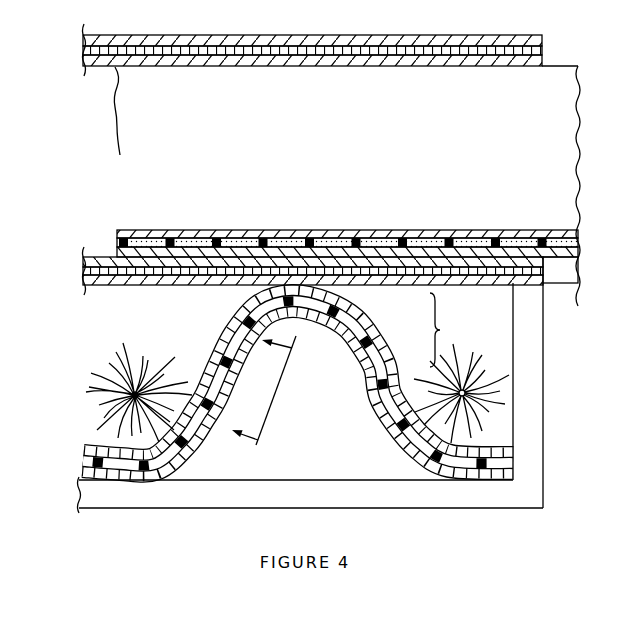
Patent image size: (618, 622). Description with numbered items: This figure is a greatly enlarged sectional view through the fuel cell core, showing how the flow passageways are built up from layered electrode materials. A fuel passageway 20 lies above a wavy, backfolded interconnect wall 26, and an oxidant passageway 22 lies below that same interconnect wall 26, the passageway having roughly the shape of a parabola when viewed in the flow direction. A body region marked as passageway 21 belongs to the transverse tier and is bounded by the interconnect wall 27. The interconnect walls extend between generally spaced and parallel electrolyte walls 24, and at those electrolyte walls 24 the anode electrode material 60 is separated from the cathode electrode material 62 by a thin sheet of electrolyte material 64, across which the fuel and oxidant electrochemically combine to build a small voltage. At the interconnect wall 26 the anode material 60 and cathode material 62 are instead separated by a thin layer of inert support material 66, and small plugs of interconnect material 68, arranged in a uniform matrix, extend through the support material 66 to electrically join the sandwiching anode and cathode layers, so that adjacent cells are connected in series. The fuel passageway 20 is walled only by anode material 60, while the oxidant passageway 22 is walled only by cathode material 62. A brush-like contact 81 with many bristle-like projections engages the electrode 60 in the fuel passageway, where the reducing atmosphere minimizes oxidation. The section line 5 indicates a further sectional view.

The section line 5- 5 is at (269, 401).
The flow passageway 20 is at (187, 325).
The flow passageway 21 is at (363, 163).
The flow passageway 22 is at (322, 400).
The electrolyte wall 24 is at (552, 270).
The interconnect wall 26 is at (298, 379).
The interconnect wall 27 is at (140, 155).
The anode electrode material 60 is at (543, 60).
The cathode electrode material 62 is at (543, 38).
The electrolyte material 64 is at (543, 50).
The inert support material 66 is at (317, 242).
The plugs of interconnect material 68 is at (176, 240).
The contact 81 is at (503, 397).